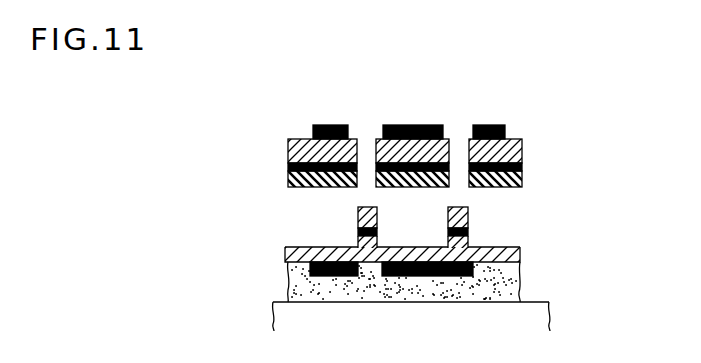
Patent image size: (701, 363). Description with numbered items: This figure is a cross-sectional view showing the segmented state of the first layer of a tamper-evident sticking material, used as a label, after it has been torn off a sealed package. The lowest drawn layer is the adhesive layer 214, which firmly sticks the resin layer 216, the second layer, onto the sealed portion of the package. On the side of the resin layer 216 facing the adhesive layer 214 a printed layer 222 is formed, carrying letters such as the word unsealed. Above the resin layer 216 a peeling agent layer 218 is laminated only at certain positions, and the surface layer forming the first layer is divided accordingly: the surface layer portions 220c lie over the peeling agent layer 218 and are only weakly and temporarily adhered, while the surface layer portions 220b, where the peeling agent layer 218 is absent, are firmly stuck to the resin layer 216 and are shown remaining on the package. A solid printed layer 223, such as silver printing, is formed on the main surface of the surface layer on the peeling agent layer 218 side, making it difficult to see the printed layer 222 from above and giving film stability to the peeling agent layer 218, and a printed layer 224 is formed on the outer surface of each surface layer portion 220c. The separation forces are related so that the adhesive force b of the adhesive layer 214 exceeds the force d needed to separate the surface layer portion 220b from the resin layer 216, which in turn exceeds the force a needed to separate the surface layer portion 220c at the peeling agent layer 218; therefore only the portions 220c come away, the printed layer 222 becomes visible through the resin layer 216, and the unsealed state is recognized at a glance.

The adhesive layer 214 is at (417, 283).
The resin layer 216 is at (415, 252).
The peeling agent layer 218 is at (294, 182).
The surface layer portion 220b is at (411, 223).
The surface layer portion 220c is at (413, 125).
The printed layer 222 is at (443, 277).
The solid printed layer 223 is at (520, 166).
The printed layer 224 is at (338, 125).
The separation force a is at (300, 247).
The adhesive force b is at (302, 288).
The separation force d is at (413, 227).